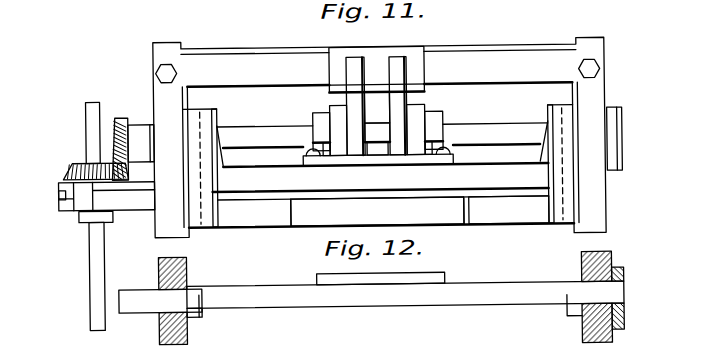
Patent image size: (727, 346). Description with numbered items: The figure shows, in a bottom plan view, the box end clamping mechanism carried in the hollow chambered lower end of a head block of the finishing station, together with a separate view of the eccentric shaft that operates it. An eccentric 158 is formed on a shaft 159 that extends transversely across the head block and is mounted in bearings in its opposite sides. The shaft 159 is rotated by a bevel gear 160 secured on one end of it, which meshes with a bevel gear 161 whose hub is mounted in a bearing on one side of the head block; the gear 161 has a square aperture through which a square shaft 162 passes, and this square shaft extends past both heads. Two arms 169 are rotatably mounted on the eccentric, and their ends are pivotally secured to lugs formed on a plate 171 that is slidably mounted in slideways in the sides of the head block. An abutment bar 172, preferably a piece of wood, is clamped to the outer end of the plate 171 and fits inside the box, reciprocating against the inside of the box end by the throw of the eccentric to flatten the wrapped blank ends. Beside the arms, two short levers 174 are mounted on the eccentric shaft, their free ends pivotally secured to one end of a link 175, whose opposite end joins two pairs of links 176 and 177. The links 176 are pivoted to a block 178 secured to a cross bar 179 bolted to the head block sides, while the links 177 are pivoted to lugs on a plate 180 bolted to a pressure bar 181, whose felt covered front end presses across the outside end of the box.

In FIG. 12, the eccentric 158 is at (427, 276).
In FIG. 12, the shaft 159 is at (516, 297).
In FIG. 11, the bevel gear 160 is at (129, 114).
In FIG. 11, the bevel gear 161 is at (70, 163).
In FIG. 11, the square shaft 162 is at (88, 242).
In FIG. 11, the arms 169 is at (330, 130).
In FIG. 11, the plate 171 is at (528, 212).
In FIG. 11, the abutment bar 172 is at (377, 211).
In FIG. 11, the short levers 174 is at (314, 127).
In FIG. 11, the link 175 is at (382, 113).
In FIG. 11, the links 176 is at (347, 83).
In FIG. 11, the links 177 is at (415, 152).
In FIG. 11, the block 178 is at (378, 54).
In FIG. 11, the cross bar 179 is at (377, 68).
In FIG. 11, the plate 180 is at (430, 156).
In FIG. 11, the pressure bar 181 is at (385, 174).